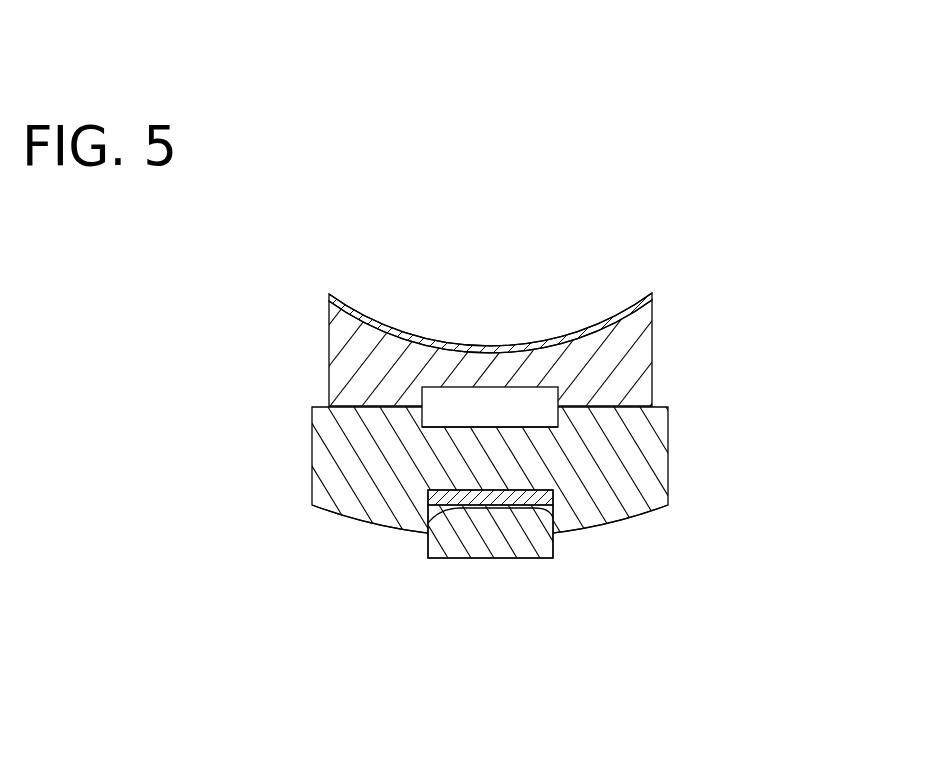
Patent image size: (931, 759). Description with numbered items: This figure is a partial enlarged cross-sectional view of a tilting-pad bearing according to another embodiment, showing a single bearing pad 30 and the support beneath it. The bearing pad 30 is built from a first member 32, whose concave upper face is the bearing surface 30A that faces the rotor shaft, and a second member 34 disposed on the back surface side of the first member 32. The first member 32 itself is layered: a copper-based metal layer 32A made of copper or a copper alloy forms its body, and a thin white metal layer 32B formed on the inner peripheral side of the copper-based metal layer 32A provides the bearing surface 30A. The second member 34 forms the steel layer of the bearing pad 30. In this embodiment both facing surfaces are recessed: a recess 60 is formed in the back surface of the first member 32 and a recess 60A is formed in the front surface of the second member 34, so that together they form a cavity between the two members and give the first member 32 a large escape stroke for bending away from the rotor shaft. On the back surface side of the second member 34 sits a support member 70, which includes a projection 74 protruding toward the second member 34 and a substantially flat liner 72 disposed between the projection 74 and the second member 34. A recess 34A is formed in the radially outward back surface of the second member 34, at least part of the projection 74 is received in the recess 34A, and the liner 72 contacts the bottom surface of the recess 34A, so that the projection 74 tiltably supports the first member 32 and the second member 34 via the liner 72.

The bearing pad 30 is at (539, 386).
The bearing surface 30A is at (473, 335).
The first member 32 is at (518, 294).
The copper-based metal layer 32A is at (623, 366).
The white metal layer 32B is at (627, 300).
The second member 34 is at (648, 447).
The recess 34A is at (555, 536).
The recess 60 is at (457, 390).
The recess 60A is at (470, 426).
The support member 70 is at (466, 589).
The liner 72 is at (460, 508).
The projection 74 is at (507, 543).